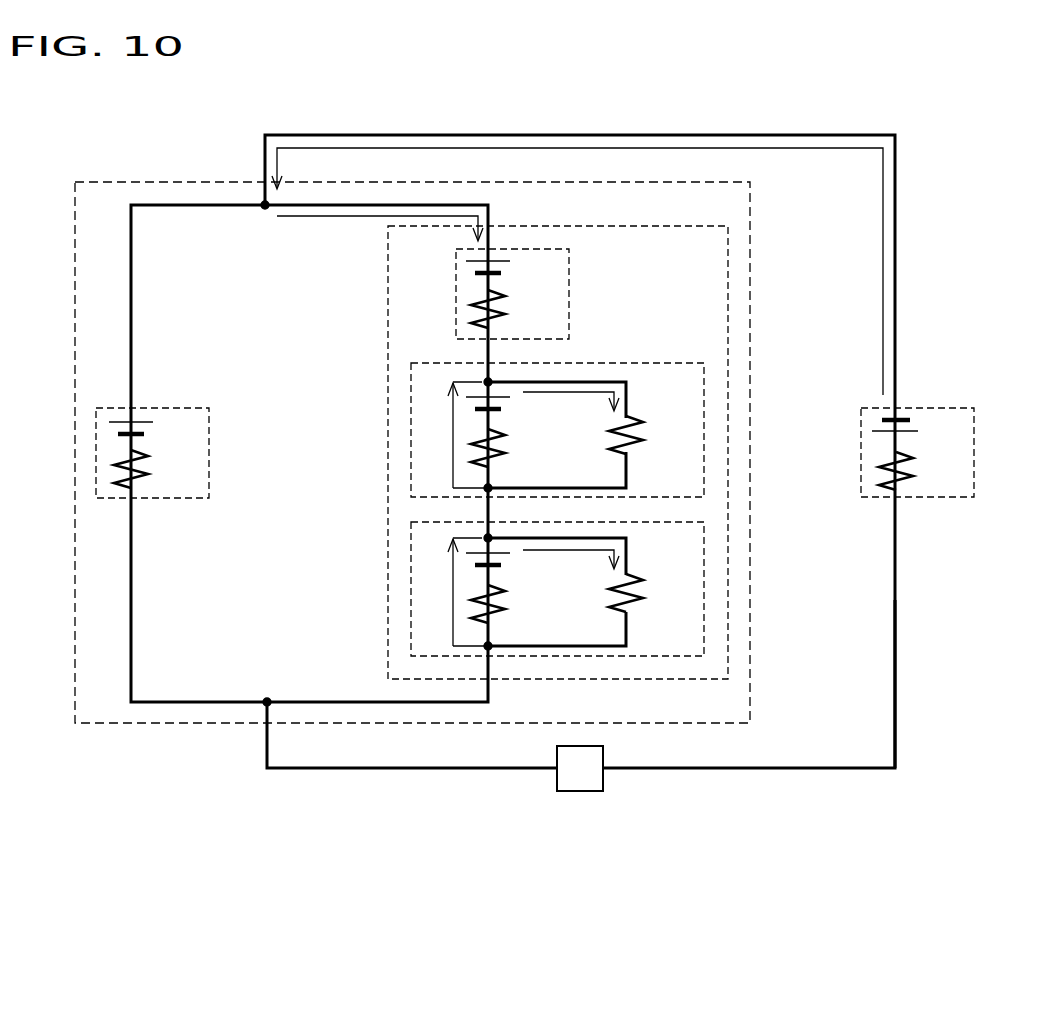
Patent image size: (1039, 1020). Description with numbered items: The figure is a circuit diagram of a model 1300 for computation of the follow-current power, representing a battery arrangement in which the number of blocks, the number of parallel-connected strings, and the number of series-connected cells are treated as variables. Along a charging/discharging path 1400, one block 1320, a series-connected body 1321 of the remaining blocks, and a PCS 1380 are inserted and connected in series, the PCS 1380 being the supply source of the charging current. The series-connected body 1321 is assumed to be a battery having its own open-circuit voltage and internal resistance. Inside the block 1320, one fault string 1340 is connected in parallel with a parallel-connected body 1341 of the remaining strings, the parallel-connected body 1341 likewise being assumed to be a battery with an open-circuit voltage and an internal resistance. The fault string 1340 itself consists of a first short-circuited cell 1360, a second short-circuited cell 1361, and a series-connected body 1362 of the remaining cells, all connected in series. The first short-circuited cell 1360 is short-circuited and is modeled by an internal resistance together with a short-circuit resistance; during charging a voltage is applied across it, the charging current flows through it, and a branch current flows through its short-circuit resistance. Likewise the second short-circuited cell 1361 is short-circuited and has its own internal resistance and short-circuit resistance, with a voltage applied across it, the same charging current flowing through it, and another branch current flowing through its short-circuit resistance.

The model for computation of follow-current power 1300 is at (853, 112).
The block 1320 is at (151, 178).
The series-connected body of the remaining n-1 blocks 1321 is at (950, 498).
The fault string 1340 is at (388, 302).
The parallel-connected body of the remaining p-1 strings 1341 is at (210, 466).
The first short-circuited cell 1360 is at (411, 578).
The second short-circuited cell 1361 is at (411, 421).
The series-connected body of the remaining s-2 cells 1362 is at (569, 300).
The PCS 1380 is at (578, 792).
The charging/discharging path 1400 is at (898, 688).